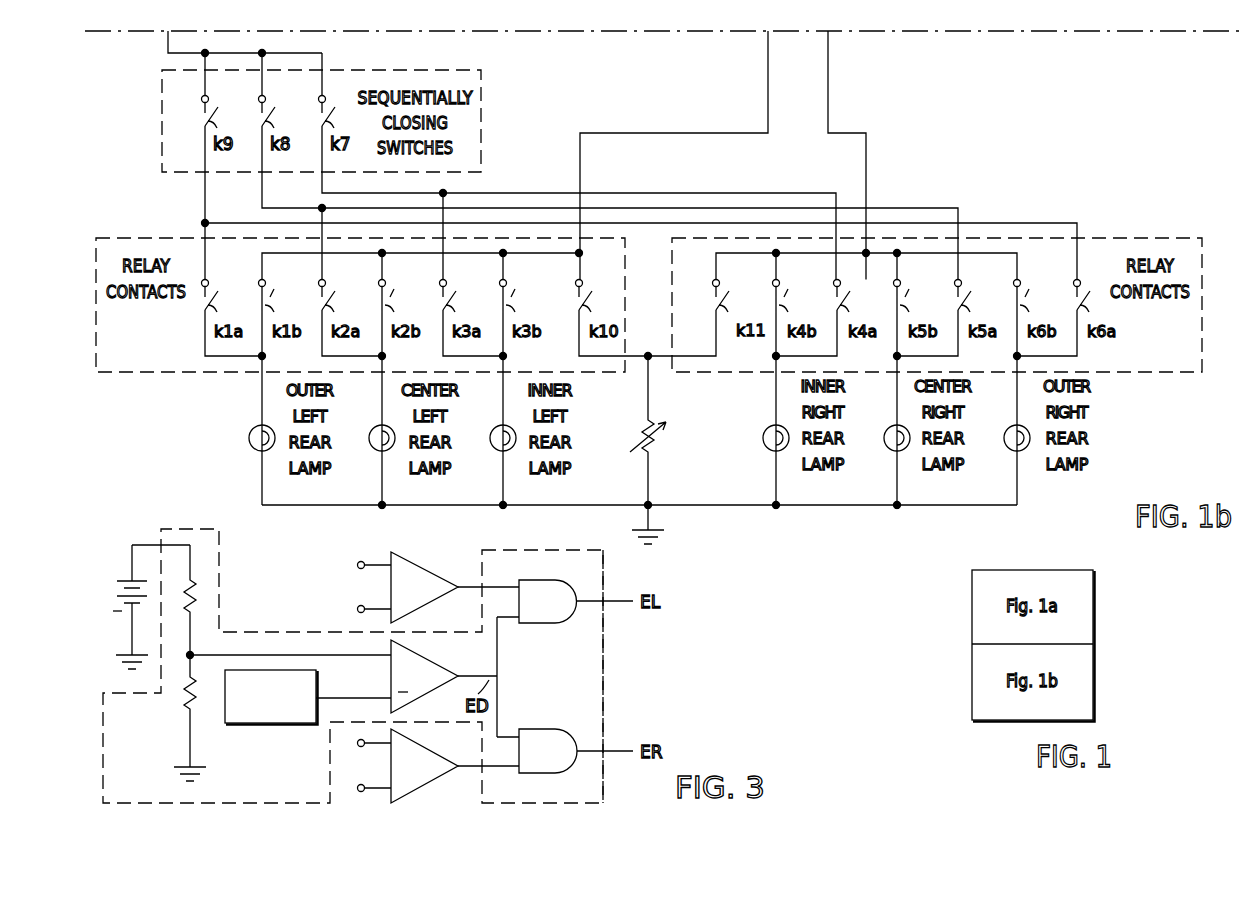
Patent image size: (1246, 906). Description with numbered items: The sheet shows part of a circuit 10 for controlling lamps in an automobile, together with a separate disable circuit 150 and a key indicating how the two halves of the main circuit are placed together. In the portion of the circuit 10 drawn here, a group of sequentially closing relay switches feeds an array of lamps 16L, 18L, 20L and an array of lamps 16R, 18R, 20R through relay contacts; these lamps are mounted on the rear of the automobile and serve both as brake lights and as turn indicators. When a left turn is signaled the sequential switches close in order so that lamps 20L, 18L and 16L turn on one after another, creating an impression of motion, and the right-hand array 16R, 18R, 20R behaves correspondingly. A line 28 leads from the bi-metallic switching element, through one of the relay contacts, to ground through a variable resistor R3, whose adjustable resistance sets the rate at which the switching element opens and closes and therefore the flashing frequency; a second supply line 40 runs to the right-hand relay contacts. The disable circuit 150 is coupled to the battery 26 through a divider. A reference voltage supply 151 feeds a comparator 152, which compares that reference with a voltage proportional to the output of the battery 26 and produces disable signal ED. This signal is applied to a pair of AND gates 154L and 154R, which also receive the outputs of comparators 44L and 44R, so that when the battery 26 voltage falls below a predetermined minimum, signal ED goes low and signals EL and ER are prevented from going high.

In FIG. 1b, the circuit 10 is at (213, 402).
In FIG. 1b, the lamp 16L is at (257, 451).
In FIG. 1b, the lamp 18L is at (377, 451).
In FIG. 1b, the lamp 20L is at (498, 451).
In FIG. 1b, the lamp 16R is at (771, 451).
In FIG. 1b, the lamp 18R is at (892, 451).
In FIG. 1b, the lamp 20R is at (1012, 451).
In FIG. 1b, the line 28 is at (768, 82).
In FIG. 1b, the supply line to relay contact k11 40 is at (828, 82).
In FIG. 1b, the variable resistor R3 is at (659, 430).
In FIG. 3, the battery 26 is at (116, 560).
In FIG. 3, the reference voltage supply 151 is at (266, 724).
In FIG. 3, the comparator 152 is at (443, 667).
In FIG. 3, the comparator 44L is at (421, 569).
In FIG. 3, the comparator 44R is at (427, 784).
In FIG. 3, the AND gate 154L is at (553, 624).
In FIG. 3, the AND gate 154R is at (563, 729).
In FIG. 3, the disable circuit 150 is at (603, 685).